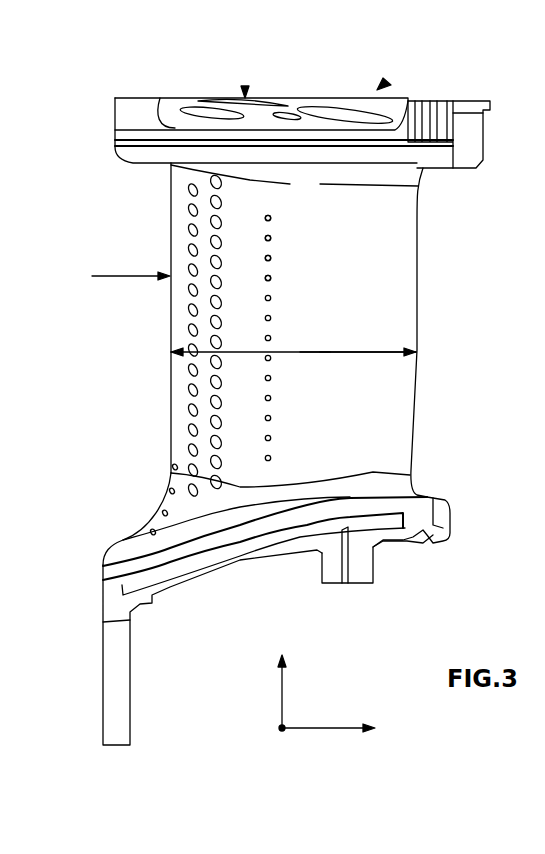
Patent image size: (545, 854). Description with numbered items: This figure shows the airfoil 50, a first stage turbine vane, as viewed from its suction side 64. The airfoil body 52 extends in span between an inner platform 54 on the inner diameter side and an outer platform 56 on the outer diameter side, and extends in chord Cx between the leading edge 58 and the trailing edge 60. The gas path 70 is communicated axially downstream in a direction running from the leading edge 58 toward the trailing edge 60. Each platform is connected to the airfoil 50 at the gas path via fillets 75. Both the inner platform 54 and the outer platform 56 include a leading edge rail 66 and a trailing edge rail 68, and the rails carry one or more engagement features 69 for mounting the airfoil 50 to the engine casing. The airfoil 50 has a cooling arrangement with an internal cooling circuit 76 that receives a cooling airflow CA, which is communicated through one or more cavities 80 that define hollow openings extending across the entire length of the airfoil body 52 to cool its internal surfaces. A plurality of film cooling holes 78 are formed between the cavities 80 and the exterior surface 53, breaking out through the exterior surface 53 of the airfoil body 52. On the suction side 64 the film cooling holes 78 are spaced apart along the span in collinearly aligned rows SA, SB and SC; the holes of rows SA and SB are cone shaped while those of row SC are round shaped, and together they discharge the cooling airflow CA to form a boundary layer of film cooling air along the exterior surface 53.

The airfoil 50 is at (382, 82).
The airfoil body 52 is at (403, 258).
The exterior surface 53 is at (370, 434).
The inner platform 54 is at (263, 550).
The outer platform 56 is at (172, 117).
The leading edge 58 is at (170, 352).
The trailing edge 60 is at (417, 352).
The suction side 64 is at (368, 273).
The leading edge rail 66 is at (125, 118).
The trailing edge rail 68 is at (472, 133).
The engagement feature 69 is at (473, 102).
The gas path 70 is at (140, 276).
The fillet 75 is at (167, 160).
The internal cooling circuit 76 is at (332, 96).
The film cooling holes 78 is at (220, 243).
The cavities 80 is at (217, 108).